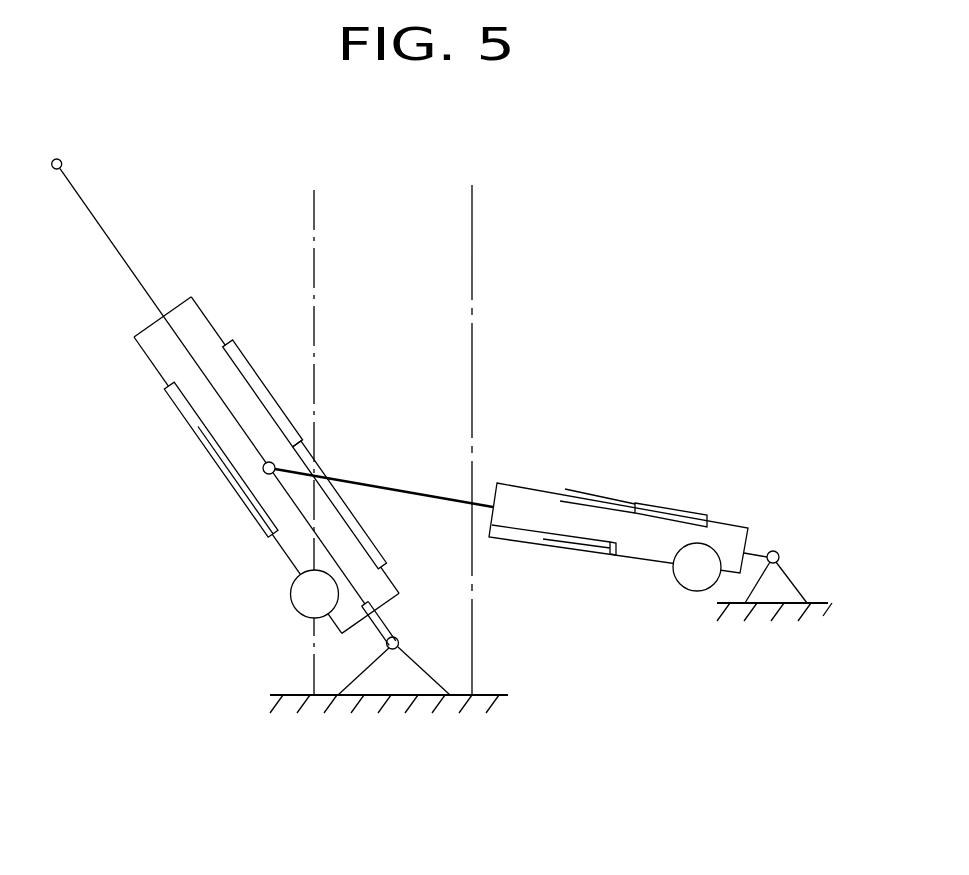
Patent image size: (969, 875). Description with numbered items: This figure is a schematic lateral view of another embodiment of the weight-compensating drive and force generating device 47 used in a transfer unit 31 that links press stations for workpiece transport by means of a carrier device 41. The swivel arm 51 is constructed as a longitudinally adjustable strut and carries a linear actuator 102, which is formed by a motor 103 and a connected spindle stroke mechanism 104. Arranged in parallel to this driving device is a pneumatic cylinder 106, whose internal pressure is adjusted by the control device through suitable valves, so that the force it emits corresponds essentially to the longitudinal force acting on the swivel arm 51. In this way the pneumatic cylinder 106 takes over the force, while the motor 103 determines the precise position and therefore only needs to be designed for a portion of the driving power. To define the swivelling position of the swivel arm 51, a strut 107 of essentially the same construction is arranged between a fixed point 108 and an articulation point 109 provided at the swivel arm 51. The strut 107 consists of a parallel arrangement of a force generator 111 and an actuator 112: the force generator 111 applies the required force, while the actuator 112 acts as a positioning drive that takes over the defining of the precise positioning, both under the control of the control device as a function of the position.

The carrier device 41 is at (71, 148).
The transfer unit 31 is at (272, 381).
The swivel arm 51 is at (129, 389).
The pneumatic cylinder 106 is at (271, 362).
The articulation point 109 is at (274, 464).
The spindle stroke mechanism 104 is at (220, 470).
The linear actuator 102 is at (245, 550).
The motor 103 is at (301, 617).
The weight-compensating drive and force generating device 47 is at (685, 456).
The strut 107 is at (637, 423).
The force generator 111 is at (659, 488).
The actuator 112 is at (630, 586).
The fixed point 108 is at (809, 565).